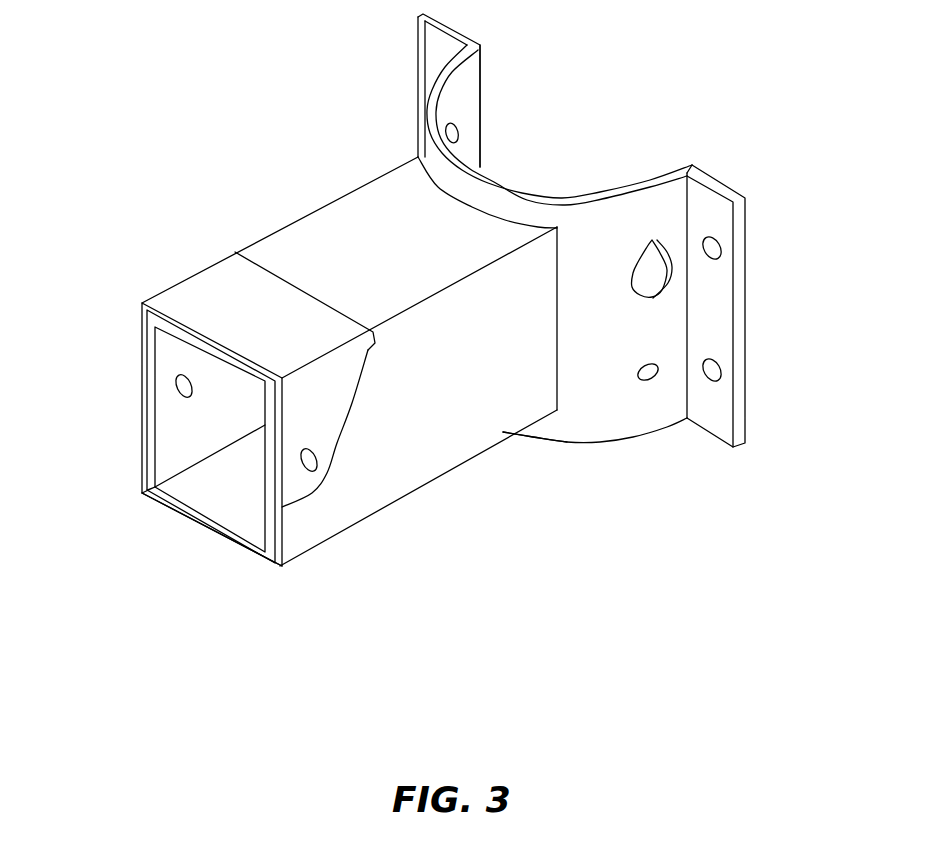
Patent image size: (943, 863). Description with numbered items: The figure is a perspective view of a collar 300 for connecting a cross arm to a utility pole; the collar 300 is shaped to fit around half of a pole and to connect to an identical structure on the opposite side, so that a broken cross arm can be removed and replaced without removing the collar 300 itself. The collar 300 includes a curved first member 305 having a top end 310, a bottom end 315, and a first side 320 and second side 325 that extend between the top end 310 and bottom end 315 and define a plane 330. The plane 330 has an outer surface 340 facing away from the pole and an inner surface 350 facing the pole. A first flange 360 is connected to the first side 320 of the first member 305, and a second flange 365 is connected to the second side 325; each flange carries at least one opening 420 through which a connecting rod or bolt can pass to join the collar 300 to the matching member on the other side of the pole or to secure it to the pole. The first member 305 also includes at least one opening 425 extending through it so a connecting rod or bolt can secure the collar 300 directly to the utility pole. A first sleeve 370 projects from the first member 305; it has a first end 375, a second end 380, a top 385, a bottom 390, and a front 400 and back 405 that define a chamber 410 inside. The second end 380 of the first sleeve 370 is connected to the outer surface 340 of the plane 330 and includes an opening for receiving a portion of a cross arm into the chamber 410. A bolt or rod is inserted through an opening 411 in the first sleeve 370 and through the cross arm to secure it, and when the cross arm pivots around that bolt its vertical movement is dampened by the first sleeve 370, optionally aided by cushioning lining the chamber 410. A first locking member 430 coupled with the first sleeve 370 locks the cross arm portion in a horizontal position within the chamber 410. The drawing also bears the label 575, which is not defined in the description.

The collar 300 is at (219, 78).
The first member 305 is at (602, 428).
The top end 310 is at (528, 188).
The bottom end 315 is at (525, 433).
The first side 320 is at (485, 60).
The second side 325 is at (685, 200).
The plane 330 is at (621, 387).
The outer surface 340 is at (637, 217).
The inner surface 350 is at (478, 110).
The first flange 360 is at (418, 45).
The second flange 365 is at (725, 318).
The first sleeve 370 is at (357, 510).
The first end 375 is at (180, 492).
The second end 380 is at (440, 193).
The top 385 is at (303, 230).
The bottom 390 is at (225, 538).
The front 400 is at (462, 392).
The back 405 is at (143, 447).
The chamber 410 is at (247, 497).
The opening 411 is at (177, 387).
The opening 420 is at (720, 248).
The opening 425 is at (457, 125).
The first locking member 430 is at (188, 292).
The rear edge of receiver tube 575 is at (558, 342).